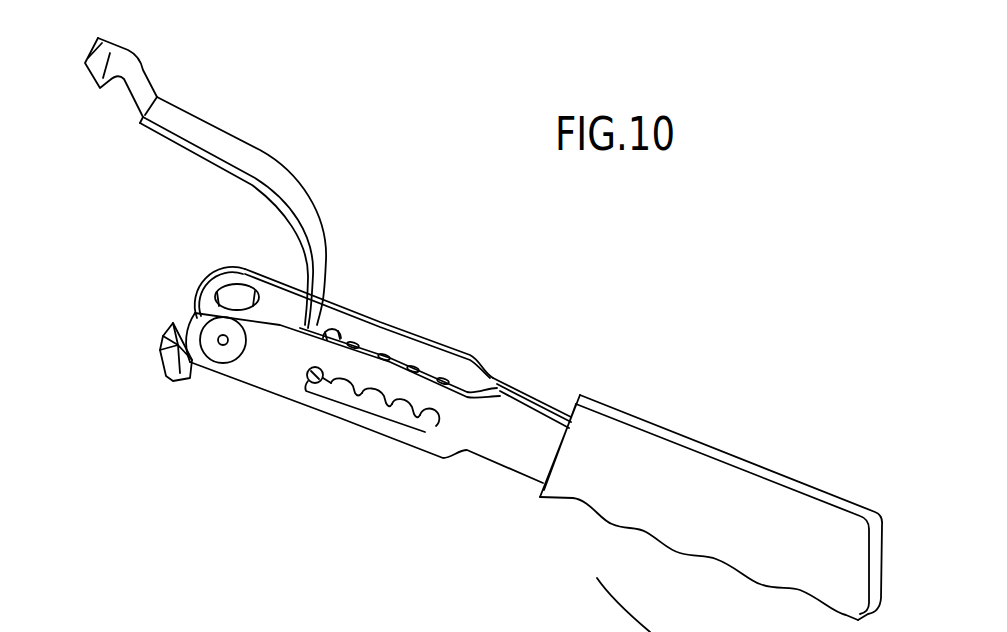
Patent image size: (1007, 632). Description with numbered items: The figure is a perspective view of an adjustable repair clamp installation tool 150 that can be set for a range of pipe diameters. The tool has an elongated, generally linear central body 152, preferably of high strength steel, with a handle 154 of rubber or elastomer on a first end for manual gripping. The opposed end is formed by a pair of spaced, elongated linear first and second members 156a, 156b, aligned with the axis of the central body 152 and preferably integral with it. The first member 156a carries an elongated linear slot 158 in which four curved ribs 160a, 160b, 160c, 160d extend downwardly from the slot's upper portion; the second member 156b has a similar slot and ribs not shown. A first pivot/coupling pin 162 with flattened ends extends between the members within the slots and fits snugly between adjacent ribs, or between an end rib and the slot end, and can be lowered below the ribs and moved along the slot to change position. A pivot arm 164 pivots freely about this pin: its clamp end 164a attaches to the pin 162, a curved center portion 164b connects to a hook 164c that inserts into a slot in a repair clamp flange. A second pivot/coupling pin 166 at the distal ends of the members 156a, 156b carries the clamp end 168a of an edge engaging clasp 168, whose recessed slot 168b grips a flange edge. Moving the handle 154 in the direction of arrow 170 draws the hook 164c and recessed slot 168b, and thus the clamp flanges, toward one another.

The adjustable repair clamp installation tool 150 is at (610, 368).
The central body 152 is at (540, 393).
The handle 154 is at (737, 518).
The first member 156a is at (301, 368).
The second member 156b is at (433, 335).
The elongated linear slot 158 is at (418, 432).
The curved rib 160a is at (330, 386).
The curved rib 160b is at (357, 393).
The curved rib 160c is at (388, 404).
The curved rib 160d is at (422, 416).
The first pivot/coupling pin 162 is at (306, 383).
The pivot arm 164 is at (263, 147).
The clamp end 164a is at (335, 328).
The curved center portion 164b is at (293, 203).
The hook 164c is at (140, 80).
The second pivot/coupling pin 166 is at (221, 343).
The edge engaging clasp 168 is at (163, 377).
The clamp end 168a is at (233, 295).
The recessed slot 168b is at (177, 327).
The arrow 170 is at (623, 600).